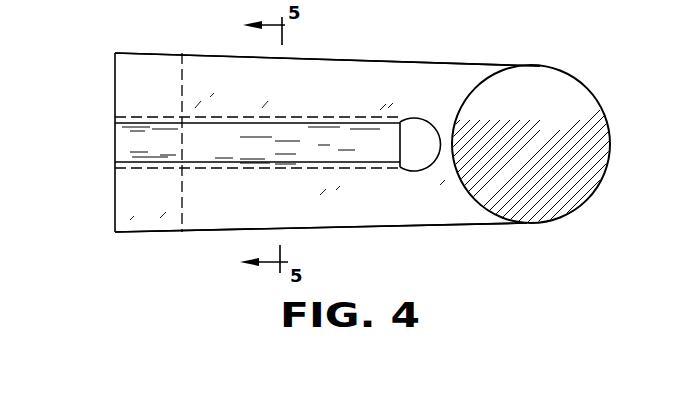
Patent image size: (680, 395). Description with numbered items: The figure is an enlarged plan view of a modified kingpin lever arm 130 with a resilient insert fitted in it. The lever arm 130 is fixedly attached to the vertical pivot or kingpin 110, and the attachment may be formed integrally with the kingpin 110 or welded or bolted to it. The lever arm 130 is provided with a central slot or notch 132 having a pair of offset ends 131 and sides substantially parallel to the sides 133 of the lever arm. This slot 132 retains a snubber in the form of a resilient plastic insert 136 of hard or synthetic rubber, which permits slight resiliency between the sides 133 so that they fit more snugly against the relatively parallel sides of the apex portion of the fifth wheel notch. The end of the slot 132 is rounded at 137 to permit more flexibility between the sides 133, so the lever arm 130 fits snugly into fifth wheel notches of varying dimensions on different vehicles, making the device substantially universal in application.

The kingpin 110 is at (604, 93).
The lever arm 130 is at (449, 52).
The offset ends 131 is at (148, 77).
The central slot 132 is at (297, 160).
The sides 133 is at (328, 62).
The resilient plastic insert 136 is at (233, 152).
The rounded end 137 is at (434, 124).